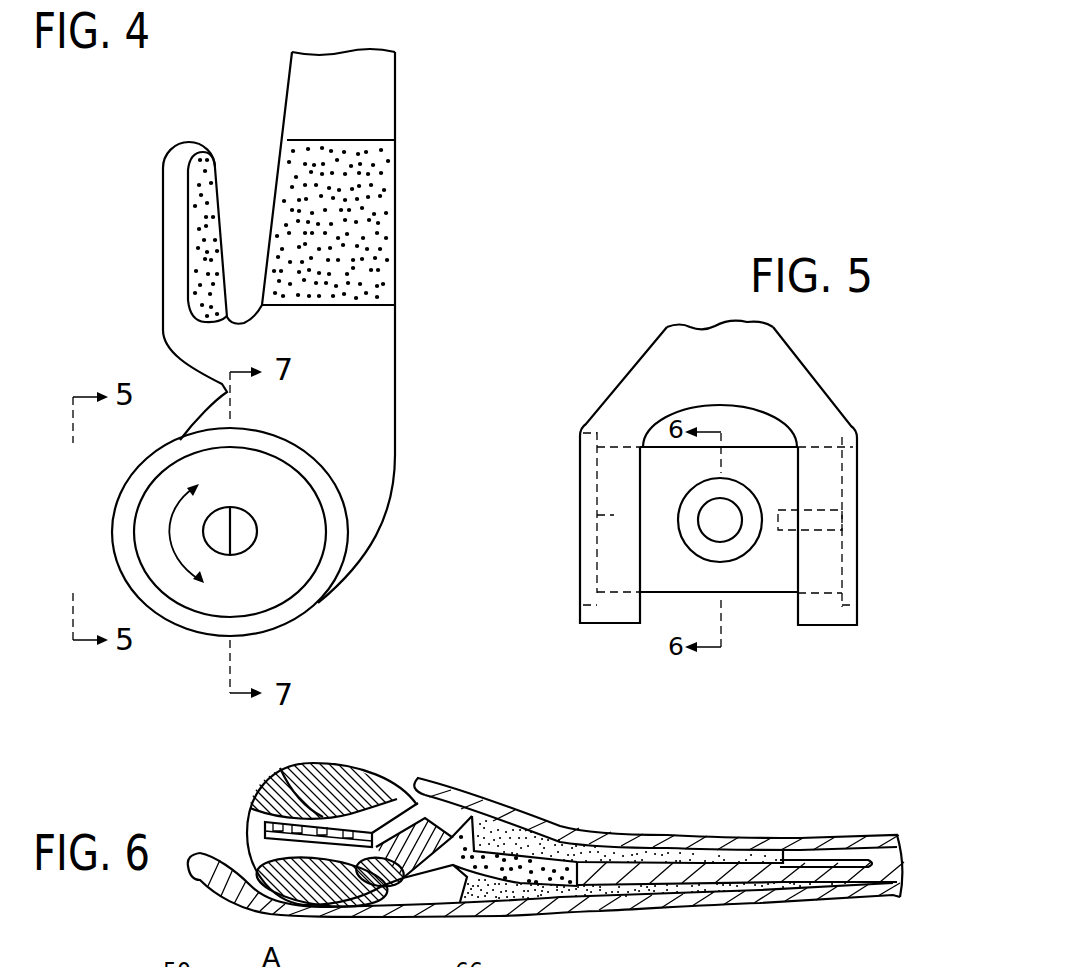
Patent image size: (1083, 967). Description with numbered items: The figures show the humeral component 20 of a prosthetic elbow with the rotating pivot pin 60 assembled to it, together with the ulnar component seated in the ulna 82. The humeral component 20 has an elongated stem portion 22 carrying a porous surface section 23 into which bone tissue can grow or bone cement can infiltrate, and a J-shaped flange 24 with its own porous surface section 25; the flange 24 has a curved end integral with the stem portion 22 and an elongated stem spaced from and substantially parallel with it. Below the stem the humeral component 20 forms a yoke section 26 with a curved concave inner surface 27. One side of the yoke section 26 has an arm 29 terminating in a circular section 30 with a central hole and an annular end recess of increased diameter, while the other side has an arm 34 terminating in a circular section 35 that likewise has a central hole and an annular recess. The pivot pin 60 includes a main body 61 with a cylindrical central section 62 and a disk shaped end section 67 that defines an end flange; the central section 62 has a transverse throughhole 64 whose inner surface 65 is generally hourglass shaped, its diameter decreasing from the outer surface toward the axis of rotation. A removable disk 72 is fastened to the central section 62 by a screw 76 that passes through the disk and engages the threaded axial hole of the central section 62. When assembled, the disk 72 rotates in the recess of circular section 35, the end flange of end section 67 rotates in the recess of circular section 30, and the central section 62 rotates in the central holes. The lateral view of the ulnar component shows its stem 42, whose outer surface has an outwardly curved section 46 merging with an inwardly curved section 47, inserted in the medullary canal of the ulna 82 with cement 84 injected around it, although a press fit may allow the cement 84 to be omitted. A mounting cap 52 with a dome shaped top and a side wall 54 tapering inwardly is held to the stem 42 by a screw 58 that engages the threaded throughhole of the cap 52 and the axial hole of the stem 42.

In FIG. 4, the humeral component 20 is at (432, 269).
In FIG. 5, the humeral component 20 is at (649, 297).
In FIG. 4, the elongated stem portion 22 is at (383, 110).
In FIG. 4, the porous surface section 23 is at (388, 220).
In FIG. 4, the J-shaped flange 24 is at (180, 280).
In FIG. 4, the porous surface section 25 is at (203, 157).
In FIG. 5, the yoke section 26 is at (772, 353).
In FIG. 5, the curved concave inner surface 27 is at (697, 405).
In FIG. 5, the arm 29 is at (615, 415).
In FIG. 5, the circular section 30 is at (613, 626).
In FIG. 5, the arm 34 is at (823, 437).
In FIG. 4, the circular section 35 is at (293, 607).
In FIG. 5, the circular section 35 is at (823, 583).
In FIG. 6, the stem 42 is at (703, 873).
In FIG. 6, the outwardly curved section 46 is at (447, 830).
In FIG. 6, the inwardly curved section 47 is at (407, 797).
In FIG. 6, the mounting cap 52 is at (260, 803).
In FIG. 6, the side wall 54 is at (317, 825).
In FIG. 6, the screw 58 is at (280, 823).
In FIG. 6, the pivot pin 60 is at (384, 771).
In FIG. 5, the main body 61 is at (613, 514).
In FIG. 5, the cylindrical central section 62 is at (765, 583).
In FIG. 6, the cylindrical central section 62 is at (360, 768).
In FIG. 5, the transverse throughhole 64 is at (700, 523).
In FIG. 6, the transverse throughhole 64 is at (403, 867).
In FIG. 5, the inner surface 65 is at (743, 497).
In FIG. 6, the inner surface 65 is at (338, 862).
In FIG. 5, the disk shaped end section 67 is at (596, 464).
In FIG. 4, the removable disk 72 is at (290, 570).
In FIG. 5, the removable disk 72 is at (843, 443).
In FIG. 4, the screw 76 is at (242, 525).
In FIG. 5, the screw 76 is at (854, 520).
In FIG. 6, the ulna 82 is at (690, 833).
In FIG. 6, the cement 84 is at (757, 853).